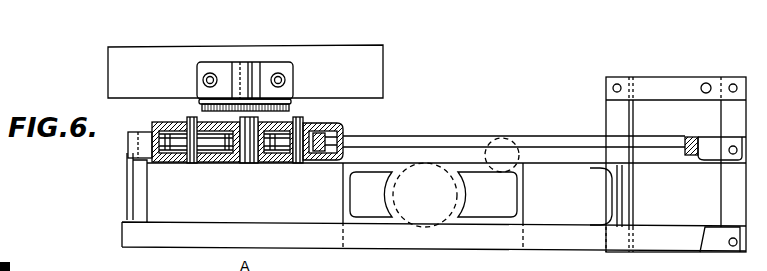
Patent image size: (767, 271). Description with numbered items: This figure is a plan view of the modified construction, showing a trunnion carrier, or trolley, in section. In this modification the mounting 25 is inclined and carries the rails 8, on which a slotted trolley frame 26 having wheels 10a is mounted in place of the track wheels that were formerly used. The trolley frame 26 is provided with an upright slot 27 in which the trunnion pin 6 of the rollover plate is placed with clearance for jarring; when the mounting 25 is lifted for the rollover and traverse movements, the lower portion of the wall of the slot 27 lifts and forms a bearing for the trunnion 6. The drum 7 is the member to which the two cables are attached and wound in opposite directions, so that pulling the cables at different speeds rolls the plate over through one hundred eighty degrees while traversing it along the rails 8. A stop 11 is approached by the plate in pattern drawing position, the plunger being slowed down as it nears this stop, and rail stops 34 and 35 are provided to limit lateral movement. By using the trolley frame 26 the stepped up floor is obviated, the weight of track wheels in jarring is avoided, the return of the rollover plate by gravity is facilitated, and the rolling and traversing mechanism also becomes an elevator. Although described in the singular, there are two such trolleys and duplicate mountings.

The trunnion pin 6 is at (244, 164).
The drum 7 is at (200, 103).
The rails 8 is at (433, 137).
The wheels 10a is at (171, 163).
The stop 11 is at (706, 83).
The mounting 25 is at (568, 166).
The trolley frame 26 is at (341, 126).
The upright slot 27 is at (252, 164).
The rail stop 34 is at (150, 140).
The rail stop 35 is at (692, 137).